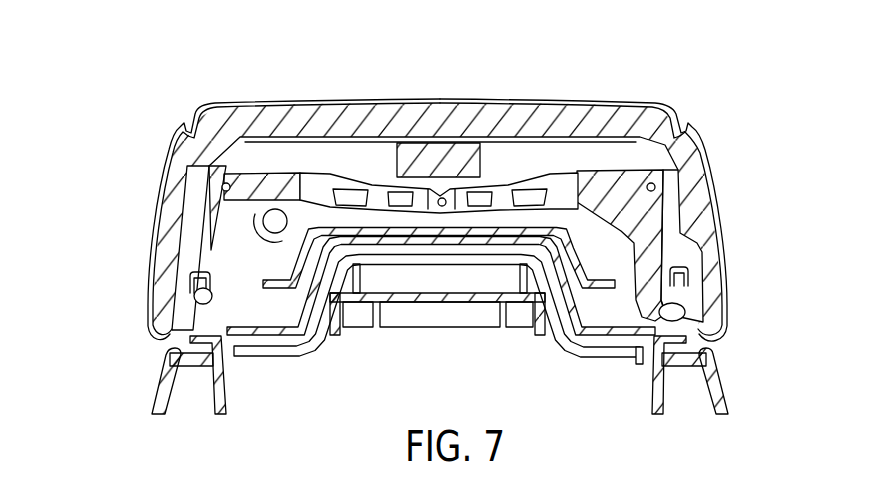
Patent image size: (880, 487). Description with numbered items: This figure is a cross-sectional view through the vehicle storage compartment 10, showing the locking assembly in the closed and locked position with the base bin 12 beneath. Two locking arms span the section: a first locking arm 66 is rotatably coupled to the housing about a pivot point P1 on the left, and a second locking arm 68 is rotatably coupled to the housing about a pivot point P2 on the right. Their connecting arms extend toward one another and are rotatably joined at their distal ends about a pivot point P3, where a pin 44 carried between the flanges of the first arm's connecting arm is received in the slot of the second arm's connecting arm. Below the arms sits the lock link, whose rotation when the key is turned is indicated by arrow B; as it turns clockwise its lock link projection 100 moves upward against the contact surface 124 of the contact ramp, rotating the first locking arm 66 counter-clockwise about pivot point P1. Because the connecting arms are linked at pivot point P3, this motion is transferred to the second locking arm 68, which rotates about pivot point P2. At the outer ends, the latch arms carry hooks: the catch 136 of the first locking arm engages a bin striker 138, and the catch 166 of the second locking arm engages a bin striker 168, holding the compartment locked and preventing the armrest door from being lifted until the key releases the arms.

The storage compartment 10 is at (126, 83).
The base bin 12 is at (736, 388).
The pin 44 is at (446, 199).
The first locking arm 66 is at (247, 182).
The second locking arm 68 is at (633, 188).
The lock link projection 100 is at (287, 198).
The contact surface 124 is at (205, 276).
The catch 136 is at (176, 344).
The bin striker 138 is at (203, 298).
The catch 166 is at (684, 314).
The bin striker 168 is at (674, 287).
The arrow B is at (272, 194).
The pivot point P1 is at (222, 184).
The pivot point P2 is at (654, 185).
The pivot point P3 is at (441, 197).